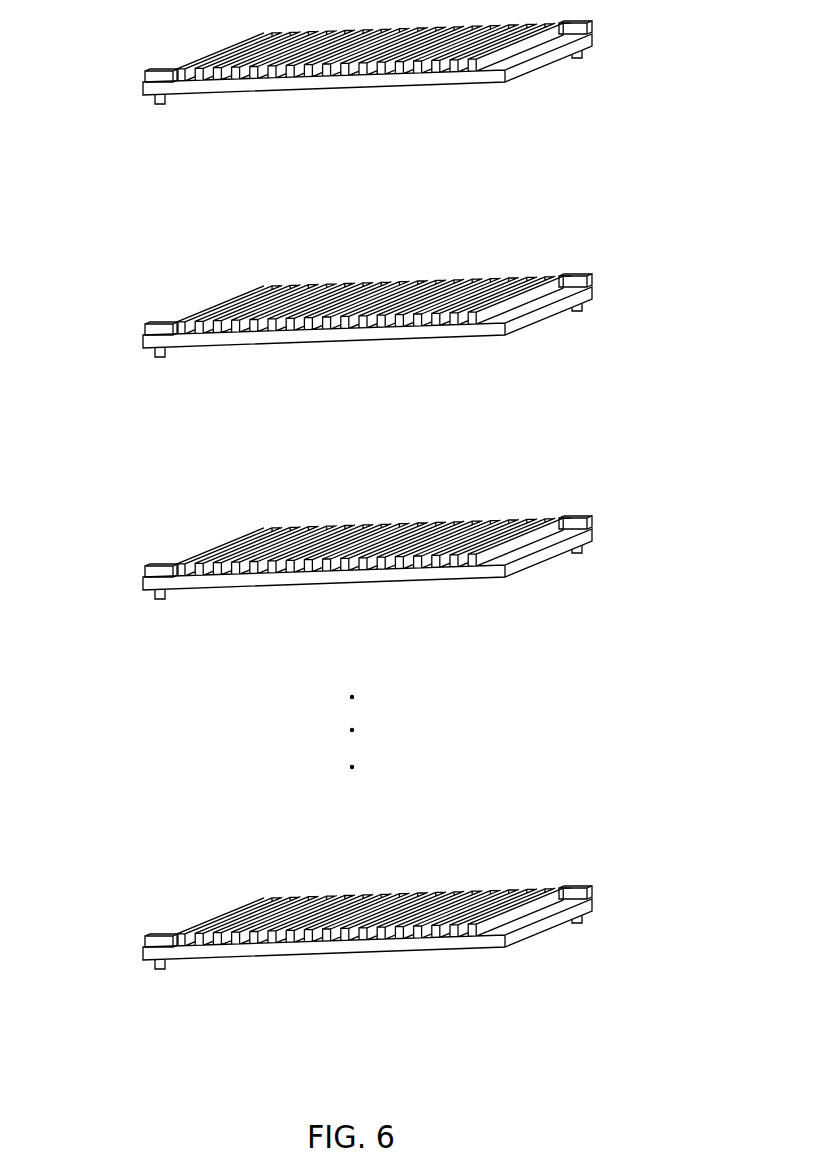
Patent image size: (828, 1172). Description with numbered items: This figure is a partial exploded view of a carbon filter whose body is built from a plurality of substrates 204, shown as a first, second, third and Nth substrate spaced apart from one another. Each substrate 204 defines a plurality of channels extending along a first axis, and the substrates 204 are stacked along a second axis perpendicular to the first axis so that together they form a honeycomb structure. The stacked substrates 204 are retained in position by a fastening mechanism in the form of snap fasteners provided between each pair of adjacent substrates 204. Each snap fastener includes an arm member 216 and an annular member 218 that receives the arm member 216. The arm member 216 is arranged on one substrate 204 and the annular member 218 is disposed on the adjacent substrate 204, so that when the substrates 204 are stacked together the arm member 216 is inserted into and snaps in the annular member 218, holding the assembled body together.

The substrate 204 is at (373, 495).
The arm member 216 is at (158, 105).
The annular member 218 is at (146, 330).